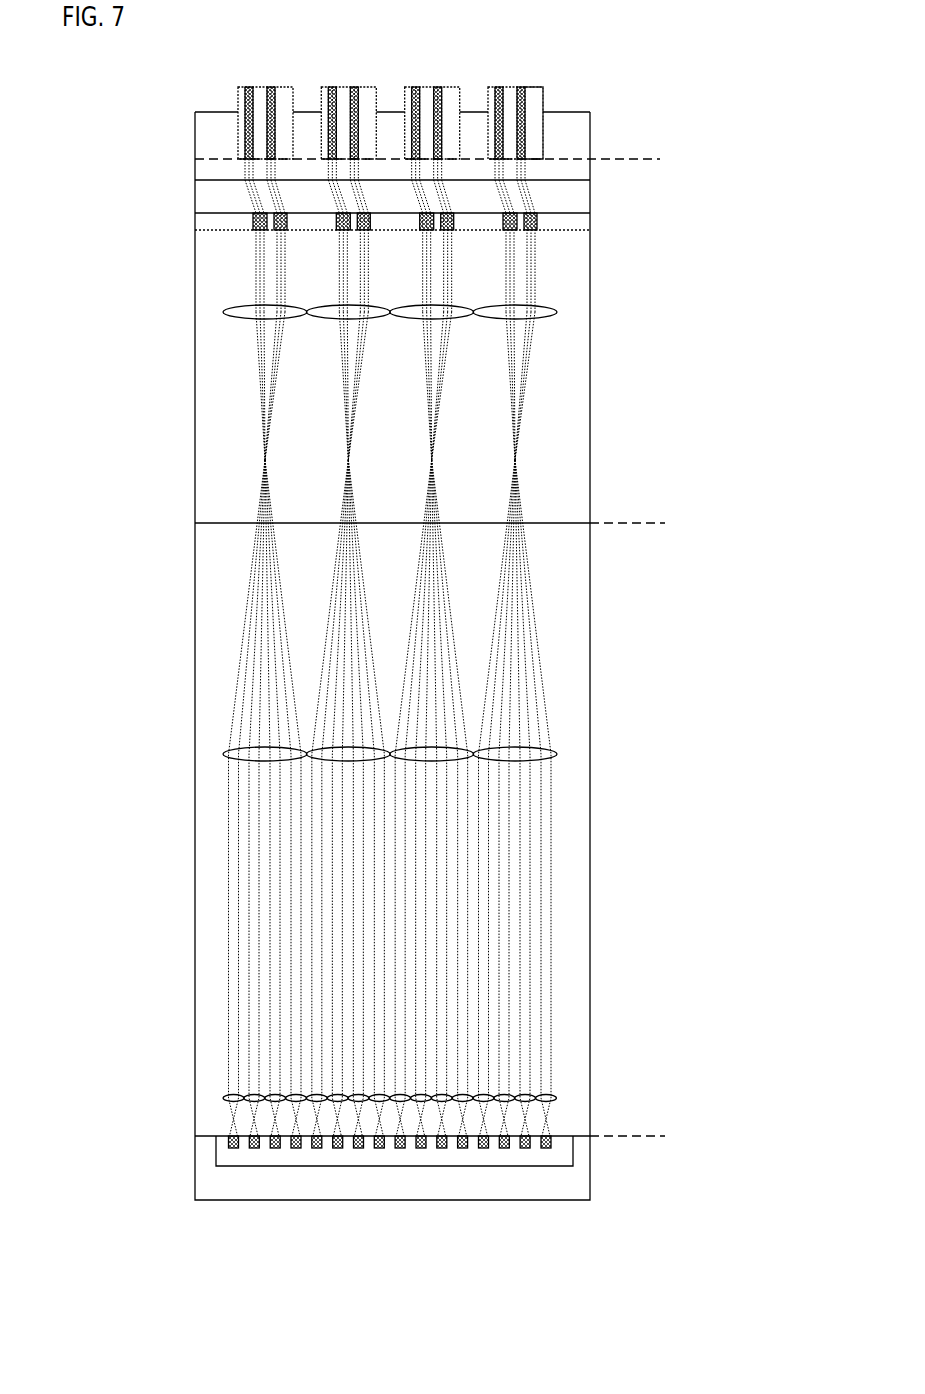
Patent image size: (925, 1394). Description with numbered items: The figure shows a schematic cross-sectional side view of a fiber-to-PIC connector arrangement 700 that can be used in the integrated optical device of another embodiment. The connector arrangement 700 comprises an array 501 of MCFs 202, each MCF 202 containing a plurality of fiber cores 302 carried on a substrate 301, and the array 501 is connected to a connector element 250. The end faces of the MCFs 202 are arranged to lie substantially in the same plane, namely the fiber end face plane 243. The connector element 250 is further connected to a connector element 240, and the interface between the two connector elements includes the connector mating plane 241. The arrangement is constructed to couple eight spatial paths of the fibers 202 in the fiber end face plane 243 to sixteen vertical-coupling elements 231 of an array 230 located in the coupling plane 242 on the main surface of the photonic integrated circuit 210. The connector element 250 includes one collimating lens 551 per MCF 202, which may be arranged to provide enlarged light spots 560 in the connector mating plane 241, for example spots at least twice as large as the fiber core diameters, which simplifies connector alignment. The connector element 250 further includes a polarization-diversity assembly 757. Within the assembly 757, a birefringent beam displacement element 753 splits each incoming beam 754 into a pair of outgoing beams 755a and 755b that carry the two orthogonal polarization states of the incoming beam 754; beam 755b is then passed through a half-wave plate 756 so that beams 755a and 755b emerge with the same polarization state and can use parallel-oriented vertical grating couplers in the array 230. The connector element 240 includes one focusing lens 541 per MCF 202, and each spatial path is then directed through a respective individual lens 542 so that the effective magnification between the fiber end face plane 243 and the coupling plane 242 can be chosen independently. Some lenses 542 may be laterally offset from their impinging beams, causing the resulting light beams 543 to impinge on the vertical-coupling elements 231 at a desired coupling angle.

The fiber-to-PIC connector arrangement 700 is at (115, 78).
The array of MCFs 501 is at (553, 46).
The MCF 202 is at (488, 87).
The fiber core 302 is at (531, 76).
The substrate 301 is at (540, 98).
The fiber end face plane 243 is at (658, 159).
The incoming beam 754 is at (520, 175).
The birefringent beam displacement element 753 is at (580, 197).
The polarization-diversity assembly 757 is at (191, 175).
The half-wave plate 756 is at (338, 213).
The outgoing beam 755a is at (520, 263).
The outgoing beam 755b is at (532, 293).
The collimating lens 551 is at (555, 313).
The connector element 250 is at (205, 475).
The connector element 240 is at (205, 555).
The connector mating plane 241 is at (660, 523).
The light spot 560 is at (345, 518).
The focusing lens 541 is at (555, 750).
The individual lens 542 is at (553, 1095).
The light beam 543 is at (556, 1115).
The coupling plane 242 is at (662, 1136).
The array of vertical-coupling elements 230 is at (566, 1156).
The vertical-coupling element 231 is at (283, 1148).
The photonic integrated circuit 210 is at (208, 1178).